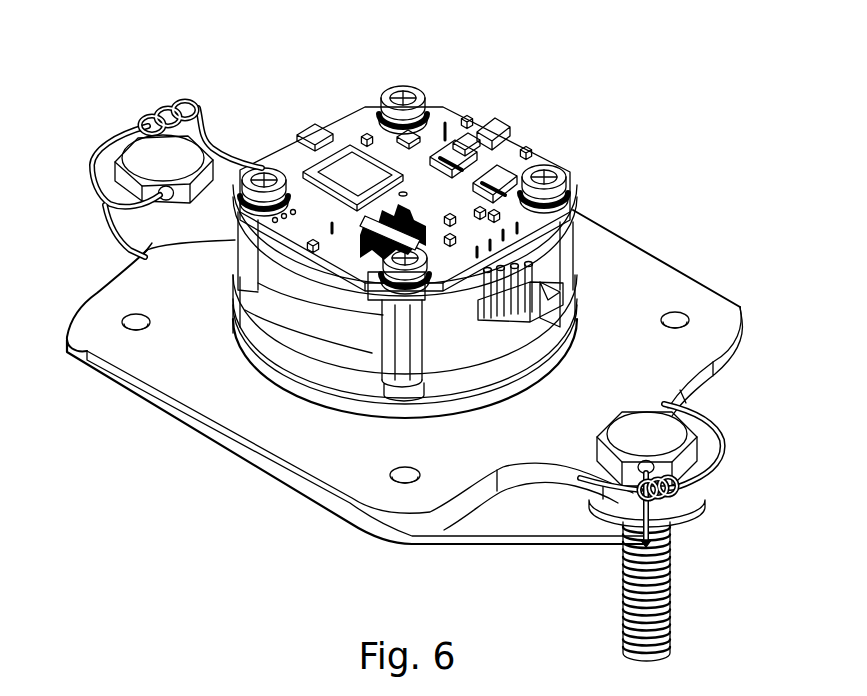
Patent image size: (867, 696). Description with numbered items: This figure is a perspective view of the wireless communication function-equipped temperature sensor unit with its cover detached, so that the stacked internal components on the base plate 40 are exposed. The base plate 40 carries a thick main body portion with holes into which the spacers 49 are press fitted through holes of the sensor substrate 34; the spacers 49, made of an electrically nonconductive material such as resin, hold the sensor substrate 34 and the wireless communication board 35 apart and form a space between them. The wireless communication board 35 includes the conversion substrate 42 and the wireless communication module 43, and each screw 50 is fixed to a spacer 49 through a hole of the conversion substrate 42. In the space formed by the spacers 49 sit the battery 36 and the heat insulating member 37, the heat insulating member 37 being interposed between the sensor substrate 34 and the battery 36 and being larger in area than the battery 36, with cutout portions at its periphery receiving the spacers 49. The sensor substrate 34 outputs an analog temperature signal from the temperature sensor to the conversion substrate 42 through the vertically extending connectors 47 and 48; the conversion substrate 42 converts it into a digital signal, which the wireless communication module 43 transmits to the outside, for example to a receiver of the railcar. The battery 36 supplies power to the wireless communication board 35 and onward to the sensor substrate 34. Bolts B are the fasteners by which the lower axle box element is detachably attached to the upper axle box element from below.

The sensor substrate 34 is at (355, 370).
The wireless communication board 35 is at (458, 105).
The battery 36 is at (335, 300).
The heat insulating member 37 is at (282, 310).
The base plate 40 is at (330, 497).
The conversion substrate 42 is at (363, 117).
The wireless communication module 43 is at (293, 148).
The connector 47 is at (530, 287).
The connector 48 is at (572, 300).
The spacer 49 is at (145, 251).
The screw 50 is at (263, 168).
The bolt B is at (140, 150).